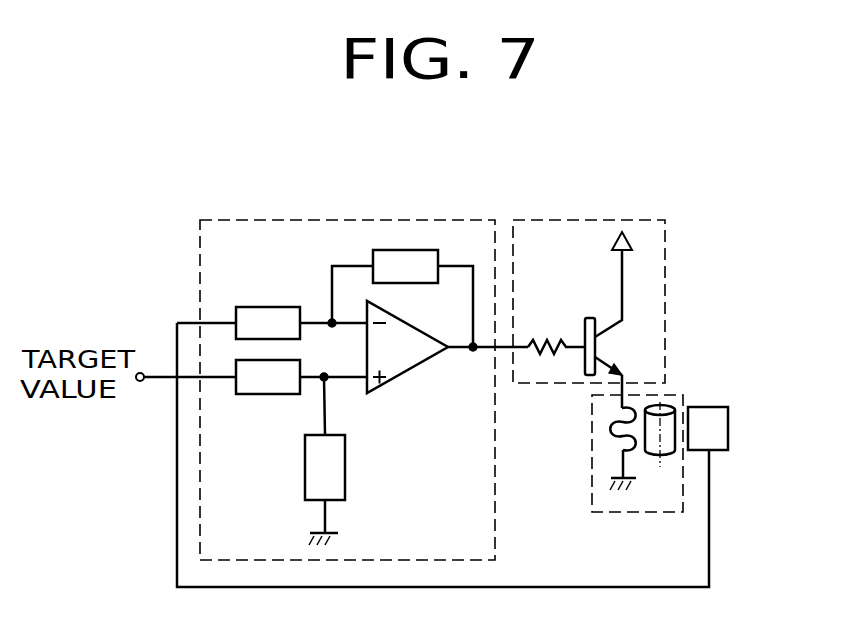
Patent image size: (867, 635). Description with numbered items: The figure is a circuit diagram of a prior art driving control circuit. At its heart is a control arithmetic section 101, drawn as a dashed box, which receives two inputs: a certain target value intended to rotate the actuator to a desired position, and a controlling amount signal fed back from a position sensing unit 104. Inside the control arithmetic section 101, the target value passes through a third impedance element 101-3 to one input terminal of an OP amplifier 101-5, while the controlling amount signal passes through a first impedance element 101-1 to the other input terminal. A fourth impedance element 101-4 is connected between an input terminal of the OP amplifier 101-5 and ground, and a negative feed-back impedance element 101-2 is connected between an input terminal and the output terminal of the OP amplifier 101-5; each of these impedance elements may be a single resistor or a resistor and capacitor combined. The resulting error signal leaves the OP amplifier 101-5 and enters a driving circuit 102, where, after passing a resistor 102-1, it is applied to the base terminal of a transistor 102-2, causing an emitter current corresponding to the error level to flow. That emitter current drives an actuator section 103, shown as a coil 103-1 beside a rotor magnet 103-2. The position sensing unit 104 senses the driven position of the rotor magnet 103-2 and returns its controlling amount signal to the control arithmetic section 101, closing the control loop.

The control arithmetic section 101 is at (200, 270).
The impedance element (Z1) 101-1 is at (265, 307).
The negative feed-back impedance element (Z2) 101-2 is at (414, 250).
The impedance element (Z3) 101-3 is at (265, 395).
The impedance element (Z4) 101-4 is at (345, 462).
The OP amplifier 101-5 is at (415, 372).
The driving circuit 102 is at (592, 220).
The resistor R1 102-1 is at (548, 362).
The transistor 102-2 is at (610, 343).
The actuator section 103 is at (590, 455).
The coil 103-1 is at (630, 463).
The rotor magnet 103-2 is at (670, 455).
The position sensing unit 104 is at (705, 410).